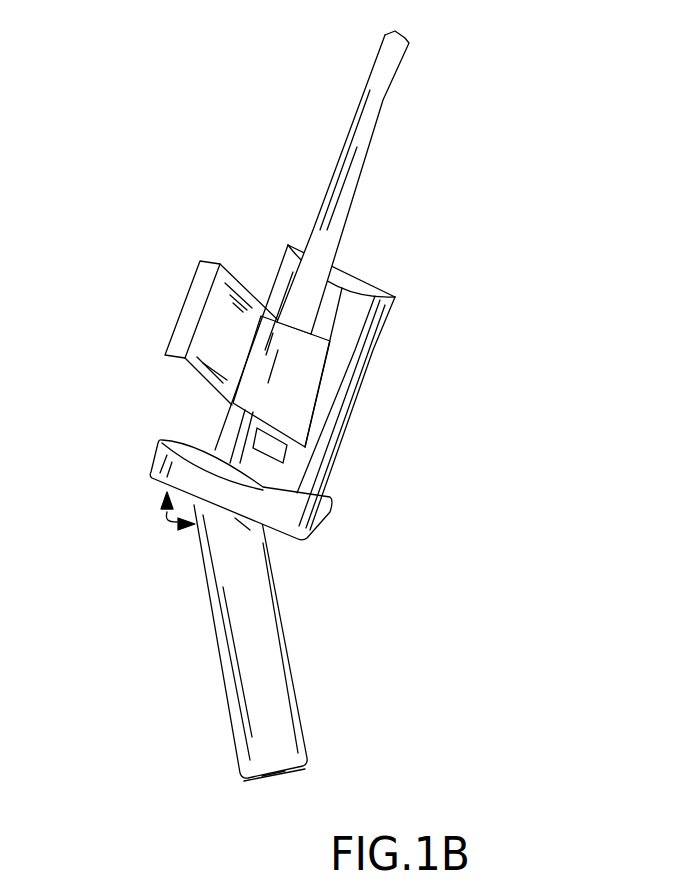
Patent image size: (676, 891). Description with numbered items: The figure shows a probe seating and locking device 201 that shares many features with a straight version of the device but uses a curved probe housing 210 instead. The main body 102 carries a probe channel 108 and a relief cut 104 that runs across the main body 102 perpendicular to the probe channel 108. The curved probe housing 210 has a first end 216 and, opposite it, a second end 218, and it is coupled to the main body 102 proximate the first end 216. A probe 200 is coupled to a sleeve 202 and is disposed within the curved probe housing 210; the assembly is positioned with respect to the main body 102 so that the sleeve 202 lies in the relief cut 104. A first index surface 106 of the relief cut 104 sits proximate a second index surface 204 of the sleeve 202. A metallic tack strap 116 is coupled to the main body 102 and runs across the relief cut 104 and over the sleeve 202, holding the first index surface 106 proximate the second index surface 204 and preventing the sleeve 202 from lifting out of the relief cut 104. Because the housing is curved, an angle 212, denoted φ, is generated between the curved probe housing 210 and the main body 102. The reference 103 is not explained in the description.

The probe seating and locking device 201 is at (467, 81).
The probe 200 is at (345, 195).
The second index surface 204 is at (280, 322).
The end face of housing 103 is at (362, 283).
The tack strap 116 is at (210, 323).
The first index surface 106 is at (320, 347).
The sleeve 202 is at (232, 405).
The main body 102 is at (337, 402).
The relief cut 104 is at (300, 420).
The probe channel 108 is at (272, 462).
The angle 212 is at (131, 512).
The first end 216 is at (242, 523).
The curved probe housing 210 is at (253, 642).
The second end 218 is at (273, 775).